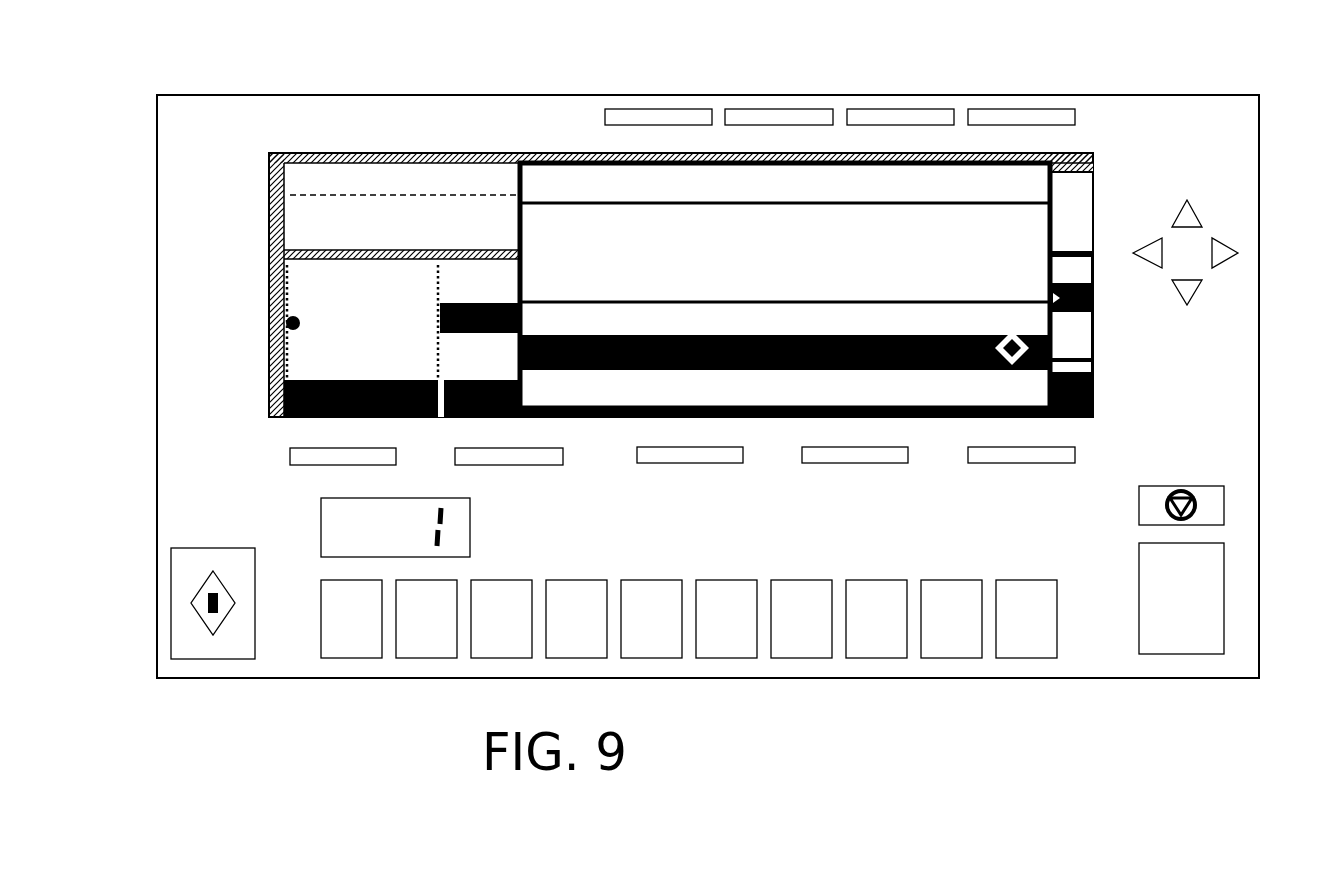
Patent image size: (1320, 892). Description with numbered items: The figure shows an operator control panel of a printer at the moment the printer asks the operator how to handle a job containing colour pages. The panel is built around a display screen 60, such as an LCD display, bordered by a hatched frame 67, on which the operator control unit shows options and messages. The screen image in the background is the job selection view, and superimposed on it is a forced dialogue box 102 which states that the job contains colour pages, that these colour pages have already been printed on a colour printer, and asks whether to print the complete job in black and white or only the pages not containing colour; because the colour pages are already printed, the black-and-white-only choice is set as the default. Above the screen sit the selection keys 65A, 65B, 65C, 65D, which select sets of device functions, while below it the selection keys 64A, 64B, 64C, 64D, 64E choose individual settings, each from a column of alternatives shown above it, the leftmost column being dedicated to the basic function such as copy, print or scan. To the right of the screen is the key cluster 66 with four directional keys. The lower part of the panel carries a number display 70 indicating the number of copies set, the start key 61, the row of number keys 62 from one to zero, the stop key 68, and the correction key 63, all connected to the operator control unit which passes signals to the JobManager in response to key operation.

The display screen 60 is at (715, 233).
The screen frame border 67 is at (270, 186).
The forced dialogue box 102 is at (1007, 285).
The selection key 65A is at (636, 109).
The selection key 65B is at (762, 109).
The selection key 65C is at (868, 109).
The selection key 65D is at (1003, 109).
The selection key 64A is at (290, 460).
The selection key 64B is at (523, 465).
The selection key 64C is at (678, 463).
The selection key 64D is at (833, 463).
The selection key 64E is at (1010, 463).
The key cluster 66 is at (1222, 196).
The number display 70 is at (470, 518).
The start key 61 is at (255, 627).
The number keys 62 is at (1080, 615).
The stop key 68 is at (1224, 503).
The correction key 63 is at (1224, 572).